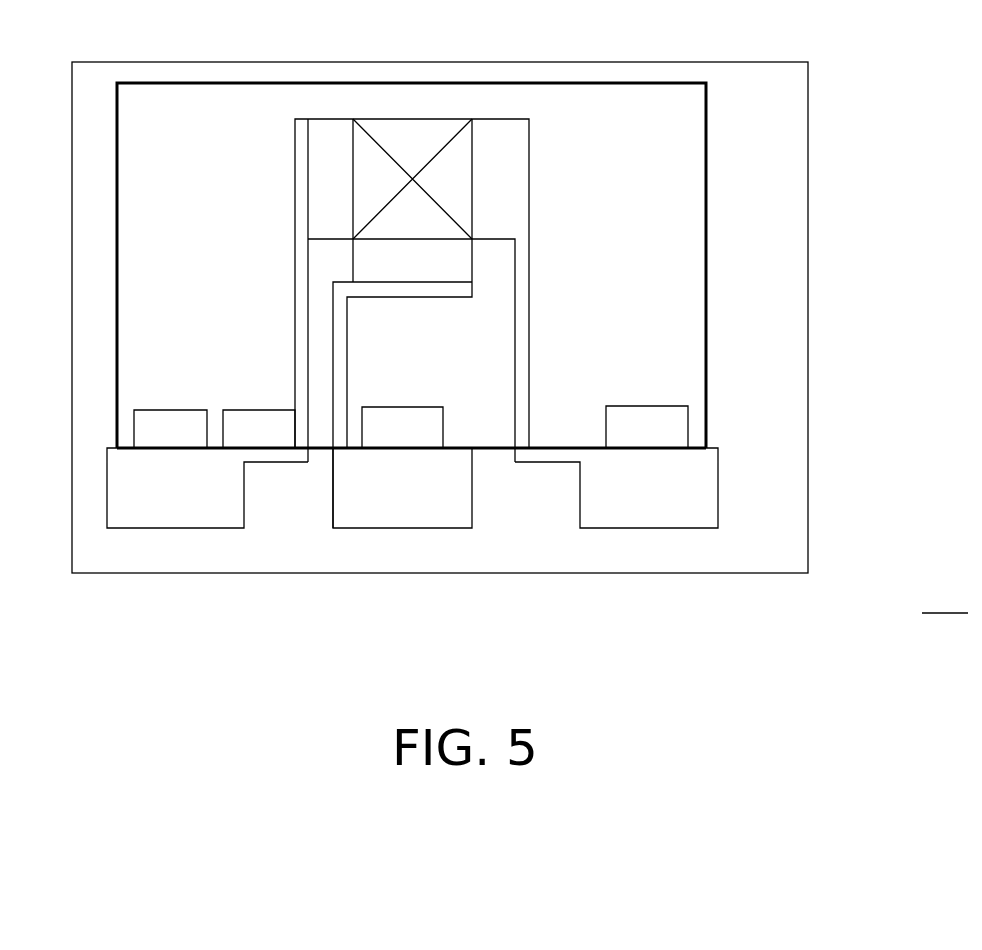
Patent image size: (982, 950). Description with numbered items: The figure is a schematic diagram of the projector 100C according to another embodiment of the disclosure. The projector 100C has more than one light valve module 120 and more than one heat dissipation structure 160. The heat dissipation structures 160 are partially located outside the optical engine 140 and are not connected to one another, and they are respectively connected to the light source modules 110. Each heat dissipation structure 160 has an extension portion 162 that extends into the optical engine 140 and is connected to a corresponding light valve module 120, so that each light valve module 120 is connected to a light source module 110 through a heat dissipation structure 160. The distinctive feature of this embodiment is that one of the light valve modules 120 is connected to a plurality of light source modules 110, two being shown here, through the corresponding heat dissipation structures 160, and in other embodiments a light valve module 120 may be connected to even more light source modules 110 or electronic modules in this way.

The projector 100C is at (945, 602).
The light source module 110 is at (247, 417).
The light valve module 120 is at (447, 250).
The optical engine 140 is at (712, 176).
The heat dissipation structure 160 is at (185, 508).
The extension portion 162 is at (297, 335).